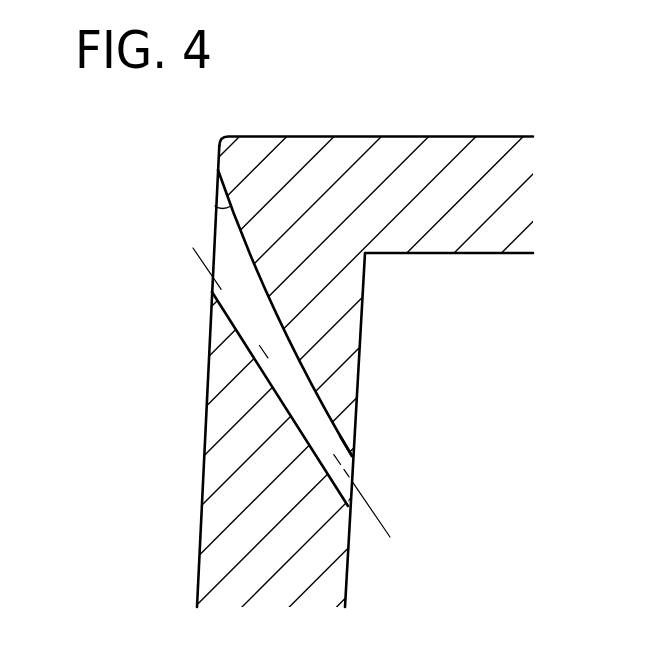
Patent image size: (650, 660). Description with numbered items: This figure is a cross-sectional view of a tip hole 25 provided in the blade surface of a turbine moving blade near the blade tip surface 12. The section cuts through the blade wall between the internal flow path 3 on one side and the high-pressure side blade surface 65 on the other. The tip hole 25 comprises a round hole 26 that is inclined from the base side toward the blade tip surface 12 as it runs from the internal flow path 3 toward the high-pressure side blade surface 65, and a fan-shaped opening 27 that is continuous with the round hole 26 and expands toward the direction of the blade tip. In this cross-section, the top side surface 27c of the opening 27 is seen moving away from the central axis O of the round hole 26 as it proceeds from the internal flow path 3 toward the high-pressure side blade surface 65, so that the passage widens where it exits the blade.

The blade tip surface 12 is at (418, 136).
The tip hole 25 is at (103, 228).
The fan-shaped opening 27 is at (213, 293).
The top side surface 27c is at (216, 206).
The round hole 26 is at (352, 460).
The high-pressure side blade surface 65 is at (208, 387).
The internal flow path 3 is at (450, 370).
The central axis O is at (380, 519).